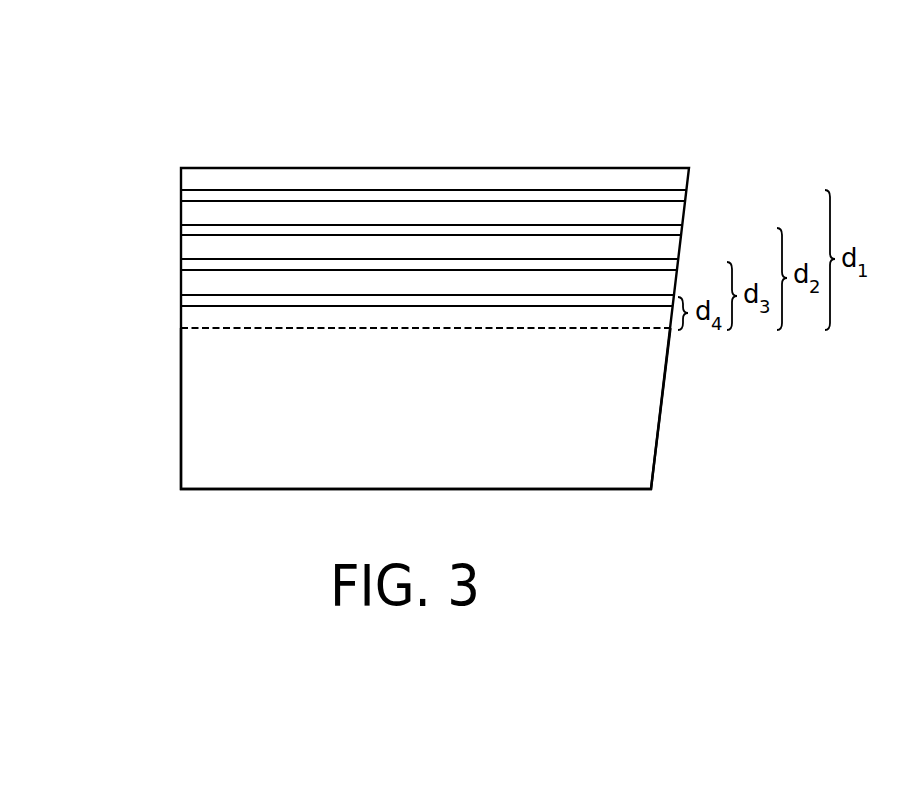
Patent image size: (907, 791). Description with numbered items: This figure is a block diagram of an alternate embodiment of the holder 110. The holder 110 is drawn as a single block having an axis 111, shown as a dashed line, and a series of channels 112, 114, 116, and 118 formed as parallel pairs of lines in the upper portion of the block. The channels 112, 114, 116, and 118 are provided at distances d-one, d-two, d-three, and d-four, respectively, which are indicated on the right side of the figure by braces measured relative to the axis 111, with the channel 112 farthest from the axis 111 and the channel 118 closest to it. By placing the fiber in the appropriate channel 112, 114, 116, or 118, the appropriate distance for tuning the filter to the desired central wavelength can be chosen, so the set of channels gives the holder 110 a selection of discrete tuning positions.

The holder 110 is at (449, 114).
The axis 111 is at (181, 328).
The channel 112 is at (181, 192).
The channel 114 is at (181, 228).
The channel 116 is at (181, 263).
The channel 118 is at (181, 298).